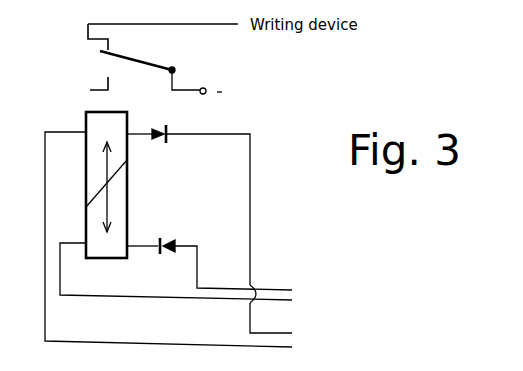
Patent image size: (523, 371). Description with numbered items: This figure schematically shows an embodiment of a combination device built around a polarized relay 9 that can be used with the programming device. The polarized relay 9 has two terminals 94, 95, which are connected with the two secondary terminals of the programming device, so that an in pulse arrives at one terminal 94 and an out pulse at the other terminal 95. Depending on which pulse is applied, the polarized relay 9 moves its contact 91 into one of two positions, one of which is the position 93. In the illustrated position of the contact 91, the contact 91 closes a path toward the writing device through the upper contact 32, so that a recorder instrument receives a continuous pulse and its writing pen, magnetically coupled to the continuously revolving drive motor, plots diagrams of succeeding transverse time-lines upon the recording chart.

The upper fixed contact connected to writing device 32 is at (82, 36).
The contact position 93 is at (82, 88).
The contact 91 is at (161, 72).
The polarized relay 9 is at (152, 195).
The terminal 94 is at (323, 286).
The terminal 95 is at (327, 331).